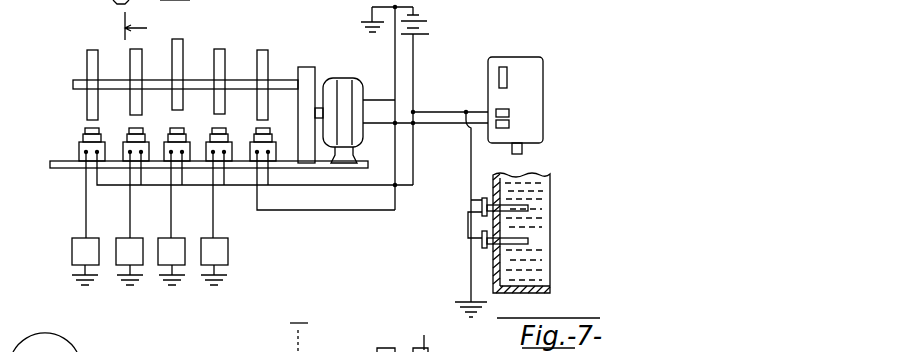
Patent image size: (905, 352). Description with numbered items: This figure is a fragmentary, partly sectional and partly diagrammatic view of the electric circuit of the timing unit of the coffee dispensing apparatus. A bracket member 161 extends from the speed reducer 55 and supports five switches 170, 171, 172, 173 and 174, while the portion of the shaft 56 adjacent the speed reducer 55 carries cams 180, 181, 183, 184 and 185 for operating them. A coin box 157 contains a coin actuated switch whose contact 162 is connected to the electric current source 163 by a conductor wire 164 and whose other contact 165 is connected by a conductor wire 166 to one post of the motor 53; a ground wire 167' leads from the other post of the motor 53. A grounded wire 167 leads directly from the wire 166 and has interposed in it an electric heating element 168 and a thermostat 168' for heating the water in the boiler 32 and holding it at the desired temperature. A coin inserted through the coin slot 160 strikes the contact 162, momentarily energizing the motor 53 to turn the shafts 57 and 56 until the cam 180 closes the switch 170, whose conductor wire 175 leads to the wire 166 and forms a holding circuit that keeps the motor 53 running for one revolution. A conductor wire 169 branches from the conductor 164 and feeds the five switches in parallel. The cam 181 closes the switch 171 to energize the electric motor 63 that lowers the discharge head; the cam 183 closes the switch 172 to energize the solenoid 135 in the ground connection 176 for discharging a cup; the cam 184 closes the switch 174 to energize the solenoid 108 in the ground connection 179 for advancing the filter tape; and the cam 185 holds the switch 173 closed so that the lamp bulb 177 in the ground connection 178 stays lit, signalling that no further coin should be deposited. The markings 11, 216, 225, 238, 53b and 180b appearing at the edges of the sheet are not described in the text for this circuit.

The spacing dimension 11 is at (146, 26).
The boiler 32 is at (540, 275).
The motor 53 is at (342, 88).
The speed reducer 55 is at (320, 67).
The shaft 56 is at (284, 82).
The shaft 57 is at (318, 108).
The electric motor 63 is at (218, 257).
The solenoid 108 is at (92, 250).
The solenoid 135 is at (178, 255).
The coin box 157 is at (543, 77).
The coin slot 160 is at (506, 67).
The bracket member 161 is at (65, 168).
The contact 162 is at (509, 113).
The electric current source 163 is at (422, 25).
The conductor wire 164 is at (428, 110).
The contact 165 is at (509, 124).
The conductor wire 166 is at (448, 125).
The grounded wire 167 is at (457, 214).
The ground wire 167' is at (413, 107).
The electric heating element 168 is at (541, 206).
The thermostat 168' is at (547, 240).
The conductor wire 169 is at (322, 188).
The switch 170 is at (265, 133).
The switch 171 is at (222, 133).
The switch 172 is at (181, 133).
The switch 173 is at (140, 133).
The switch 174 is at (107, 126).
The conductor wire 175 is at (230, 206).
The ground connection 176 is at (187, 218).
The lamp bulb 177 is at (137, 258).
The ground connection 178 is at (145, 216).
The ground connection 179 is at (85, 225).
The cam 180 is at (268, 50).
The cam 181 is at (222, 56).
The cam 183 is at (178, 46).
The cam 184 is at (90, 62).
The cam 185 is at (130, 68).
The member (adjacent figure) 216 is at (175, 6).
The member (adjacent figure) 225 is at (115, 3).
The member (adjacent figure) 238 is at (72, 347).
The member (adjacent figure) 53b is at (342, 337).
The member (adjacent figure) 180b is at (424, 335).